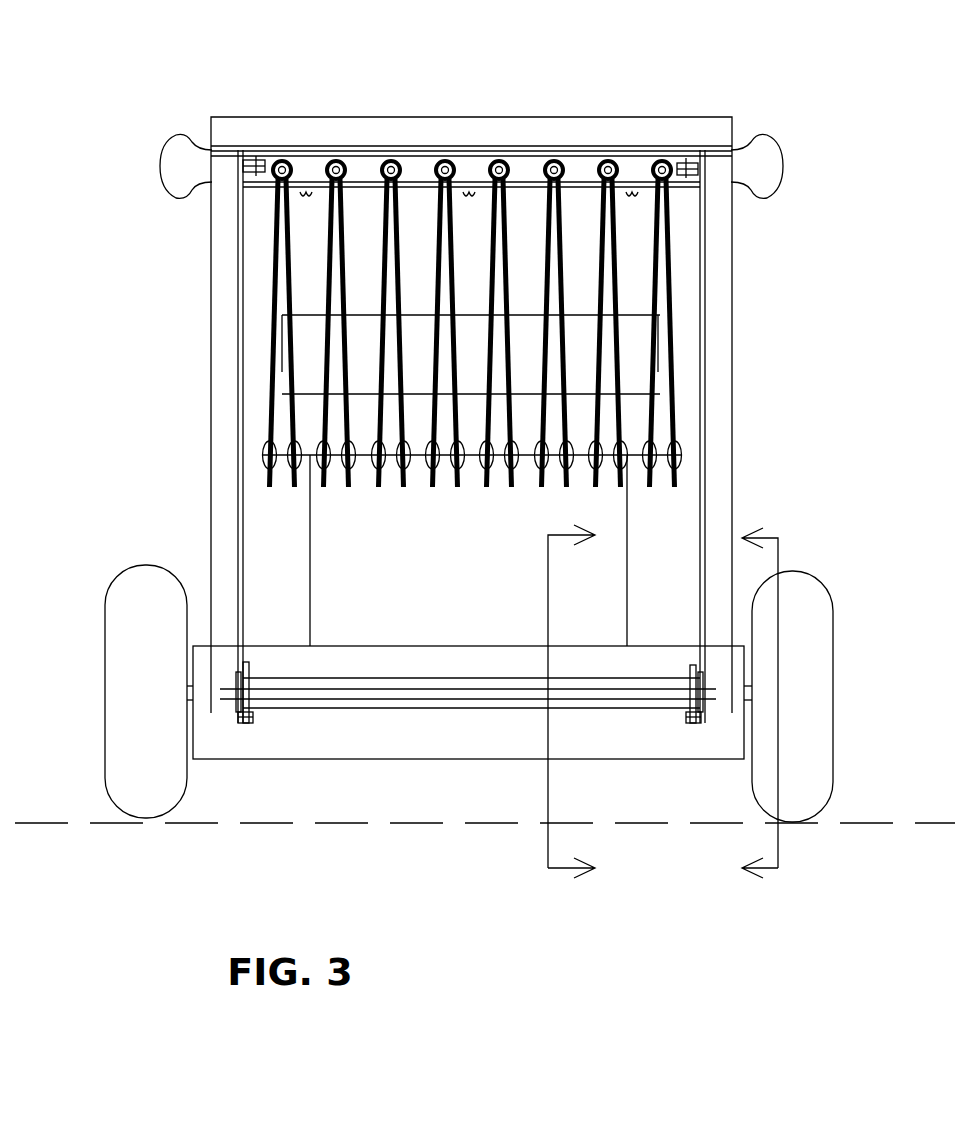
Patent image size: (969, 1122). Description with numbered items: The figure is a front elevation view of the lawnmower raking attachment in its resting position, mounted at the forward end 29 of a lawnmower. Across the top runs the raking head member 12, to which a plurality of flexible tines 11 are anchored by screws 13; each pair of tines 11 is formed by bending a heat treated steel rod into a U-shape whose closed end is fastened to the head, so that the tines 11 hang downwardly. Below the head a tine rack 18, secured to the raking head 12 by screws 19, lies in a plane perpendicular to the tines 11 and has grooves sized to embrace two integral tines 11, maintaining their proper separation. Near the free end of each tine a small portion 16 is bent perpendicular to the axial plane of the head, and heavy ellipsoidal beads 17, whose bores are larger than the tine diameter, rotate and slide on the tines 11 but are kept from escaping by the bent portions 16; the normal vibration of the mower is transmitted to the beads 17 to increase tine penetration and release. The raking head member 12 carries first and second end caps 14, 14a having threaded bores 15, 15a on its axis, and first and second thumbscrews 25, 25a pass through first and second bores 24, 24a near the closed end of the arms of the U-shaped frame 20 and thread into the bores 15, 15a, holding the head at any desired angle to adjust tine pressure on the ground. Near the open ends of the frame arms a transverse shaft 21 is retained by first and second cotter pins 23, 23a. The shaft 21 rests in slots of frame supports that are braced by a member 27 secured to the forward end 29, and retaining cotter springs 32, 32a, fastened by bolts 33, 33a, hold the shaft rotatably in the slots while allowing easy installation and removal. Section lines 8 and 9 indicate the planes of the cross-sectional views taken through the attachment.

The section line 8- 8 is at (787, 706).
The section line 9- 9 is at (544, 707).
The flexible tines 11 is at (263, 407).
The raking head member 12 is at (527, 160).
The screws 13 is at (432, 155).
The first end cap 14 is at (703, 150).
The second end cap 14a is at (252, 152).
The threaded bore 15 is at (690, 160).
The threaded bore 15a is at (267, 158).
The bent free end portion 16 is at (355, 483).
The beads 17 is at (405, 467).
The tine rack 18 is at (578, 198).
The screws 19 is at (630, 198).
The U-shaped frame 20 is at (735, 425).
The transverse shaft 21 is at (342, 702).
The first cotter pin 23 is at (715, 710).
The second cotter pin 23a is at (225, 703).
The first bore 24 is at (708, 178).
The second bore 24a is at (240, 172).
The first thumbscrew 25 is at (781, 153).
The second thumbscrew 25a is at (162, 153).
The brace 27 is at (460, 715).
The forward end of the lawnmower 29 is at (563, 755).
The retaining cotter spring 32 is at (686, 687).
The retaining cotter spring 32a is at (250, 682).
The bolt 33 is at (674, 722).
The bolt 33a is at (250, 722).